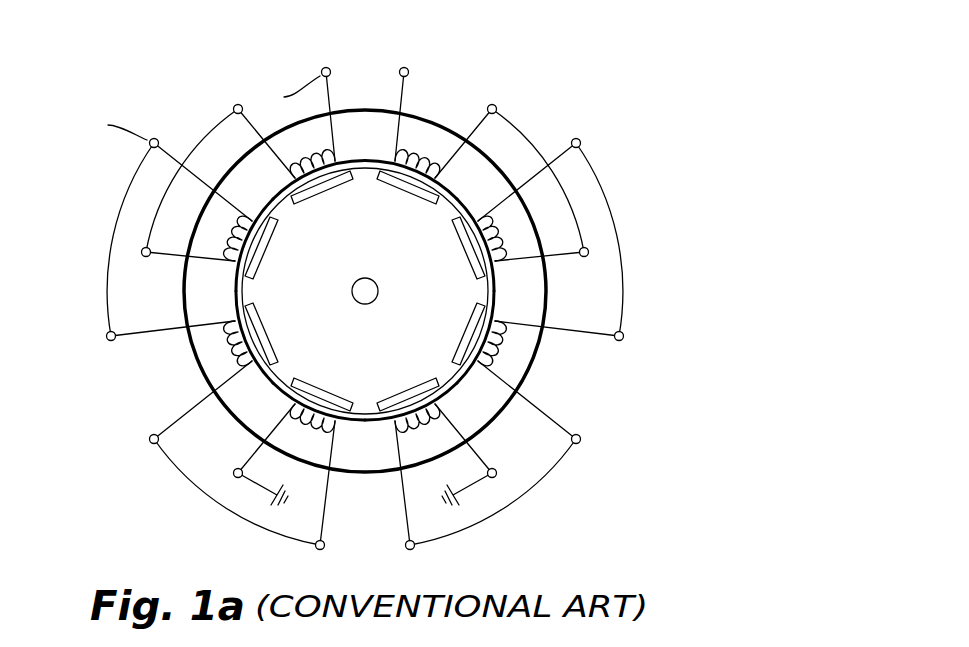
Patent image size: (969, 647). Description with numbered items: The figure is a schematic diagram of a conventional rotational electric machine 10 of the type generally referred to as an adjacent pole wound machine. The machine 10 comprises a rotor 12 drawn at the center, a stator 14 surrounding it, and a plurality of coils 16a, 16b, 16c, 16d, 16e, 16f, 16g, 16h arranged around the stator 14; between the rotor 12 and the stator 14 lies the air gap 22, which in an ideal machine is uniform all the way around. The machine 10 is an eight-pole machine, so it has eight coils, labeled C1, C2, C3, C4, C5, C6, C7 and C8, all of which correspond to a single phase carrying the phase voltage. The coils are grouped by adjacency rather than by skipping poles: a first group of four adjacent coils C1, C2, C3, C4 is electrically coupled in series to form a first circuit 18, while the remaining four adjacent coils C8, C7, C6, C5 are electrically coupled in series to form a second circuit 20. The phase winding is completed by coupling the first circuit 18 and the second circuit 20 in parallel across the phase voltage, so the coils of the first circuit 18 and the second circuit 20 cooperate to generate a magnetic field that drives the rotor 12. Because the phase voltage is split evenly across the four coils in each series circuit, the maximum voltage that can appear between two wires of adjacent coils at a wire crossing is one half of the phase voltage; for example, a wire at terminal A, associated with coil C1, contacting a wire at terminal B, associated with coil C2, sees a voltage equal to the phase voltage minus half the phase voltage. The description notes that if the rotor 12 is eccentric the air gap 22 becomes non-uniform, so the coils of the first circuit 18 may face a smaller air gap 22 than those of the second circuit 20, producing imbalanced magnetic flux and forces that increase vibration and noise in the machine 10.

The rotational electric machine 10 is at (361, 289).
The rotor 12 is at (324, 338).
The stator 14 is at (366, 107).
The coil 16a is at (338, 157).
The coil 16b is at (251, 217).
The coil 16c is at (234, 320).
The coil 16d is at (293, 408).
The coil 16e is at (395, 426).
The coil 16f is at (478, 366).
The coil 16g is at (502, 265).
The coil 16h is at (438, 175).
The first circuit 18 is at (112, 243).
The second circuit 20 is at (618, 228).
The air gap 22 is at (366, 416).
The coil C1 is at (312, 154).
The coil C2 is at (227, 238).
The coil C3 is at (227, 343).
The coil C4 is at (312, 430).
The coil C5 is at (417, 430).
The coil C6 is at (501, 343).
The coil C7 is at (502, 238).
The coil C8 is at (417, 154).